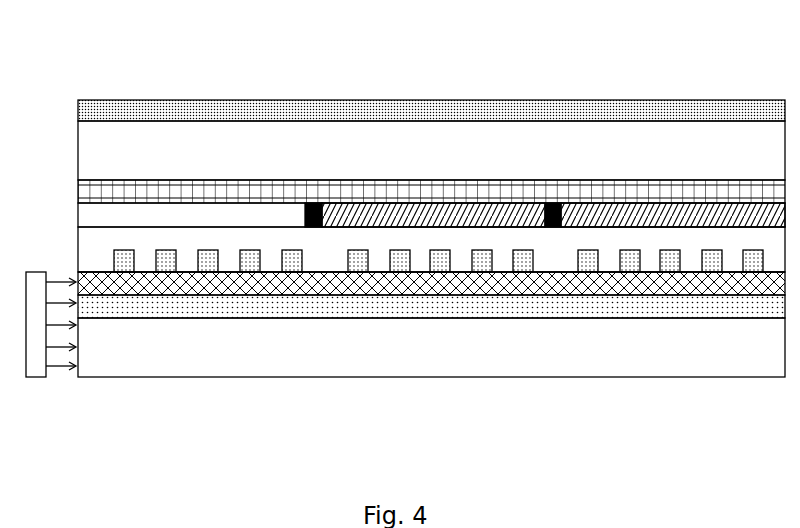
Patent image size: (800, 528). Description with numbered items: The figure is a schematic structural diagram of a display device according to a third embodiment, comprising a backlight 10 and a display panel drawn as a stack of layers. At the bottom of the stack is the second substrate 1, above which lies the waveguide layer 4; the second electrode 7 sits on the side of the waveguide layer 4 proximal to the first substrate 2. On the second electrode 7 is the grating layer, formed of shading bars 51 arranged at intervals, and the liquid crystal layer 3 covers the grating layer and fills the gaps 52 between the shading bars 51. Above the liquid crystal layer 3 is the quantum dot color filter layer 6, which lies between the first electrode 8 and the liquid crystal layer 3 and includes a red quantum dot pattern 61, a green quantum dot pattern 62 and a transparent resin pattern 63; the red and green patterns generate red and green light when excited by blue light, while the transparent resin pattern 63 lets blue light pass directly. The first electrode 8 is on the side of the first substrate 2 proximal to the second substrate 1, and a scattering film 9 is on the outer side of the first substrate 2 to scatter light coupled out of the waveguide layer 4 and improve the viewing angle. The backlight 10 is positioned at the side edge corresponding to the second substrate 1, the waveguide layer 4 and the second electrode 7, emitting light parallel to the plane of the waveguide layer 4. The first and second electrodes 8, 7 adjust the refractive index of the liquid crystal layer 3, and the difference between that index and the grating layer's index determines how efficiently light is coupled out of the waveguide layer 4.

The second substrate 1 is at (682, 350).
The first substrate 2 is at (727, 138).
The liquid crystal layer 3 is at (633, 240).
The waveguide layer 4 is at (623, 303).
The quantum dot color filter layer 6 is at (431, 127).
The second electrode 7 is at (323, 288).
The first electrode 8 is at (178, 195).
The scattering film 9 is at (148, 113).
The backlight 10 is at (42, 282).
The shading bars 51 is at (437, 270).
The gaps 52 is at (499, 268).
The red quantum dot pattern 61 is at (591, 143).
The green quantum dot pattern 62 is at (455, 215).
The transparent resin pattern 63 is at (282, 223).